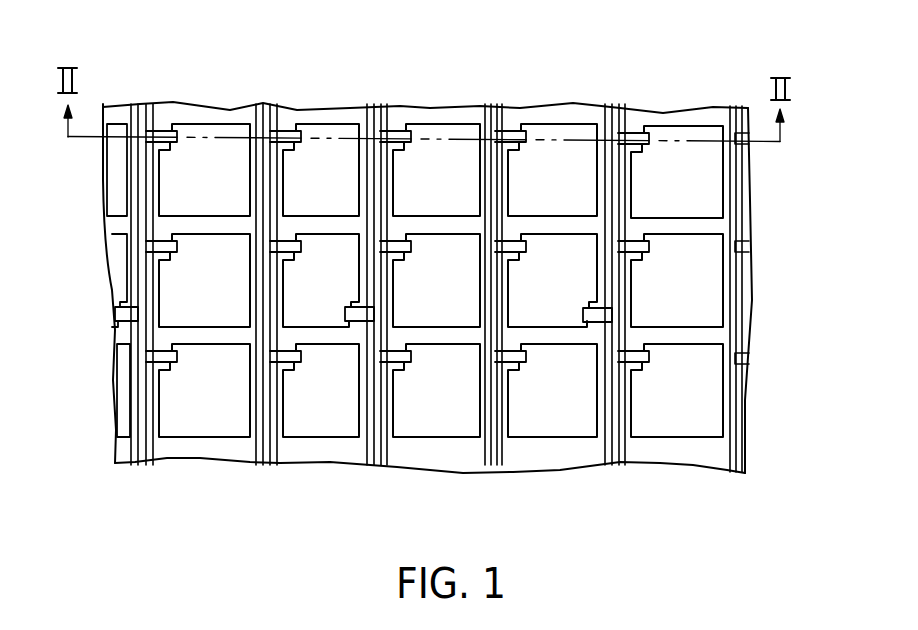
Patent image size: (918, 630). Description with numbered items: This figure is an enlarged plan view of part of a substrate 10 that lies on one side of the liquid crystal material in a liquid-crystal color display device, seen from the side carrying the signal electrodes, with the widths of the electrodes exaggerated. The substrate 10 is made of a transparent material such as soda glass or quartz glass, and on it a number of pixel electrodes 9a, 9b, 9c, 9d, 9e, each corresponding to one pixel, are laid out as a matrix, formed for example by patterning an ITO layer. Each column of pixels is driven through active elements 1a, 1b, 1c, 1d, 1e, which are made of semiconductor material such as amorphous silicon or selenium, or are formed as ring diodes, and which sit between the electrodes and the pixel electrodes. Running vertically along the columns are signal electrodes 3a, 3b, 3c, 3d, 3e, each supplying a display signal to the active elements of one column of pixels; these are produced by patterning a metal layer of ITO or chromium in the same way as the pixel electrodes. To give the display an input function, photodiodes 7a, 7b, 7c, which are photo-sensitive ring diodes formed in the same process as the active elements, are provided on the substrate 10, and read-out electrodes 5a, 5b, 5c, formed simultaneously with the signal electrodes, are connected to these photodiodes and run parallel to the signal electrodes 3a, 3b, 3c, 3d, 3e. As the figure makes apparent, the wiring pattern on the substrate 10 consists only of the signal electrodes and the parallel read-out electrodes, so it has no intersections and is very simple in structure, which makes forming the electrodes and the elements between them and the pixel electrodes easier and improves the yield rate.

The active element 1a is at (162, 128).
The active element 1b is at (273, 128).
The active element 1c is at (395, 128).
The active element 1d is at (508, 128).
The active element 1e is at (633, 128).
The signal electrode 3a is at (157, 458).
The signal electrode 3b is at (265, 465).
The signal electrode 3c is at (390, 458).
The signal electrode 3d is at (492, 473).
The signal electrode 3e is at (625, 453).
The read-out electrode 5a is at (140, 458).
The read-out electrode 5b is at (372, 460).
The read-out electrode 5c is at (600, 453).
The photodiode 7a is at (117, 312).
The photodiode 7b is at (345, 312).
The photodiode 7c is at (603, 317).
The pixel electrode 9a is at (213, 128).
The pixel electrode 9b is at (333, 128).
The pixel electrode 9c is at (453, 128).
The pixel electrode 9d is at (573, 128).
The pixel electrode 9e is at (690, 128).
The substrate 10 is at (703, 458).